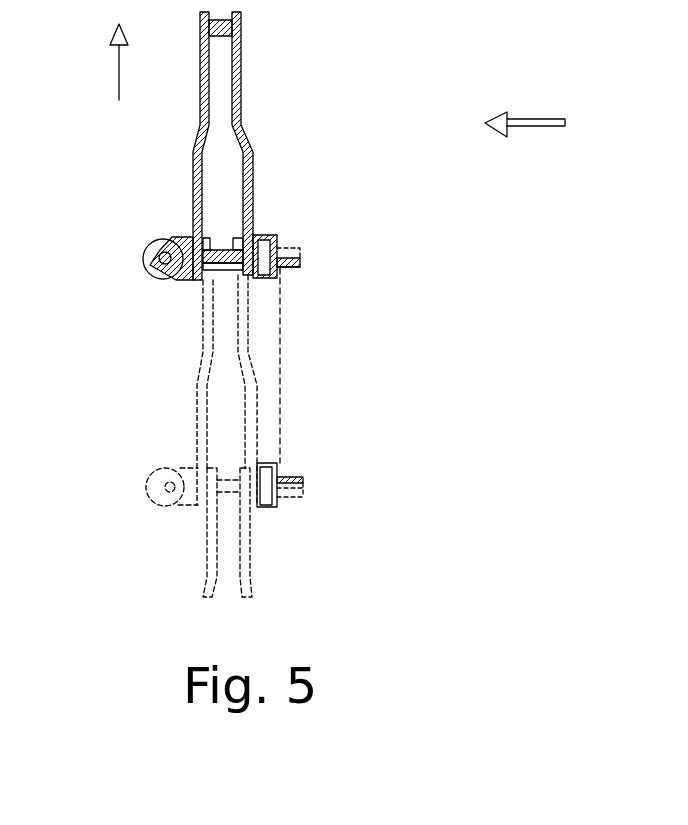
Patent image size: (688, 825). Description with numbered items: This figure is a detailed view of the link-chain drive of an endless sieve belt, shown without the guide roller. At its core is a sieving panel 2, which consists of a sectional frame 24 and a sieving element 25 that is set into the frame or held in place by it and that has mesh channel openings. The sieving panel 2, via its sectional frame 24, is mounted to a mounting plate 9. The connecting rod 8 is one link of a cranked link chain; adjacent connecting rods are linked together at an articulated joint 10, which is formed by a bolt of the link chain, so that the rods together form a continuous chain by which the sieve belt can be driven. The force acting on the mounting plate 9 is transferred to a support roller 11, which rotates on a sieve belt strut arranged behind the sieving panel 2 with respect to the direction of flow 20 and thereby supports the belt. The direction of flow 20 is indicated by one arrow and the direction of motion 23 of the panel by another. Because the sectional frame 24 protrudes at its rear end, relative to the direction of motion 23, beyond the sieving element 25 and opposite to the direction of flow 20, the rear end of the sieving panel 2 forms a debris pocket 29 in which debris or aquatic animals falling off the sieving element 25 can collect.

The sieving panel 2 is at (279, 266).
The connecting rod 8 is at (242, 95).
The mounting plate 9 is at (262, 236).
The articulated joint 10 is at (213, 265).
The support roller 11 is at (156, 247).
The direction of flow 20 is at (527, 130).
The direction of motion 23 is at (119, 62).
The sectional frame 24 is at (300, 250).
The sieving element 25 is at (281, 325).
The debris pocket 29 is at (313, 452).